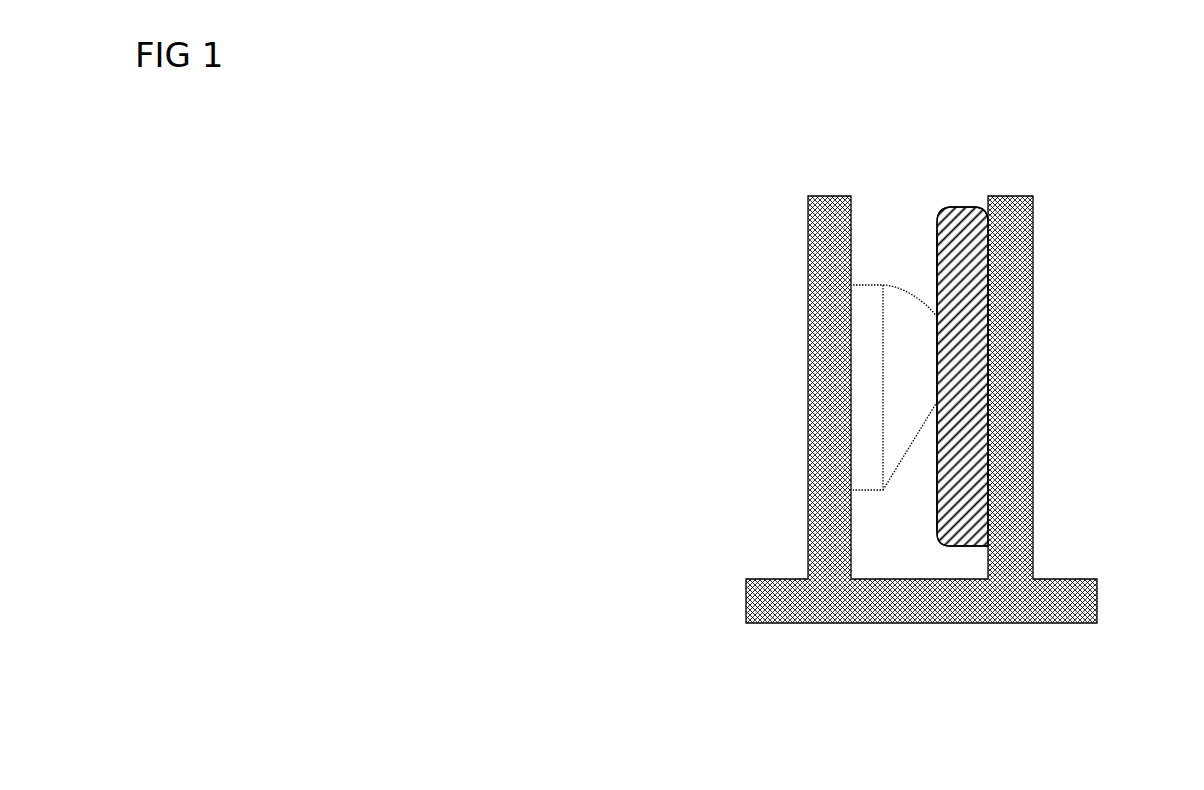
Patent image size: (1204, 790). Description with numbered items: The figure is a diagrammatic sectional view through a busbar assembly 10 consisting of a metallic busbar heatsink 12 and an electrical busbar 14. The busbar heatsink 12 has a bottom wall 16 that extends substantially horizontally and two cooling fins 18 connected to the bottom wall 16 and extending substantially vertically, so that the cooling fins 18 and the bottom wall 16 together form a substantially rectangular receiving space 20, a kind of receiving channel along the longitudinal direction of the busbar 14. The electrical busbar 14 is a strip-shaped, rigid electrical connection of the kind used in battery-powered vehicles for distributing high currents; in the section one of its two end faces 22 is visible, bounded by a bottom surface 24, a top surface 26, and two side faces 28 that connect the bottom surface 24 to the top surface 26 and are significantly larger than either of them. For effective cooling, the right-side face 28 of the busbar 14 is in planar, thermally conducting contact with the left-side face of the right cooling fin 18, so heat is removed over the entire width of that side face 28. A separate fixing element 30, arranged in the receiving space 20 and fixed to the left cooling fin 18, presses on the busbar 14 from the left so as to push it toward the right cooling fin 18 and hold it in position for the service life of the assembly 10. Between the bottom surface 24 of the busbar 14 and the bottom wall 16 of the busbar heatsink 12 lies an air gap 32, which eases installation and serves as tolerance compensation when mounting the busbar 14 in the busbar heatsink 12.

The busbar assembly 10 is at (1150, 263).
The busbar heatsink 12 is at (770, 553).
The electrical busbar 14 is at (961, 242).
The bottom wall 16 is at (878, 595).
The cooling fins 18 is at (820, 378).
The receiving space 20 is at (895, 222).
The end face 22 is at (963, 342).
The bottom surface 24 is at (940, 565).
The top surface 26 is at (942, 205).
The side faces 28 is at (929, 255).
The fixing element 30 is at (907, 338).
The air gap 32 is at (965, 562).